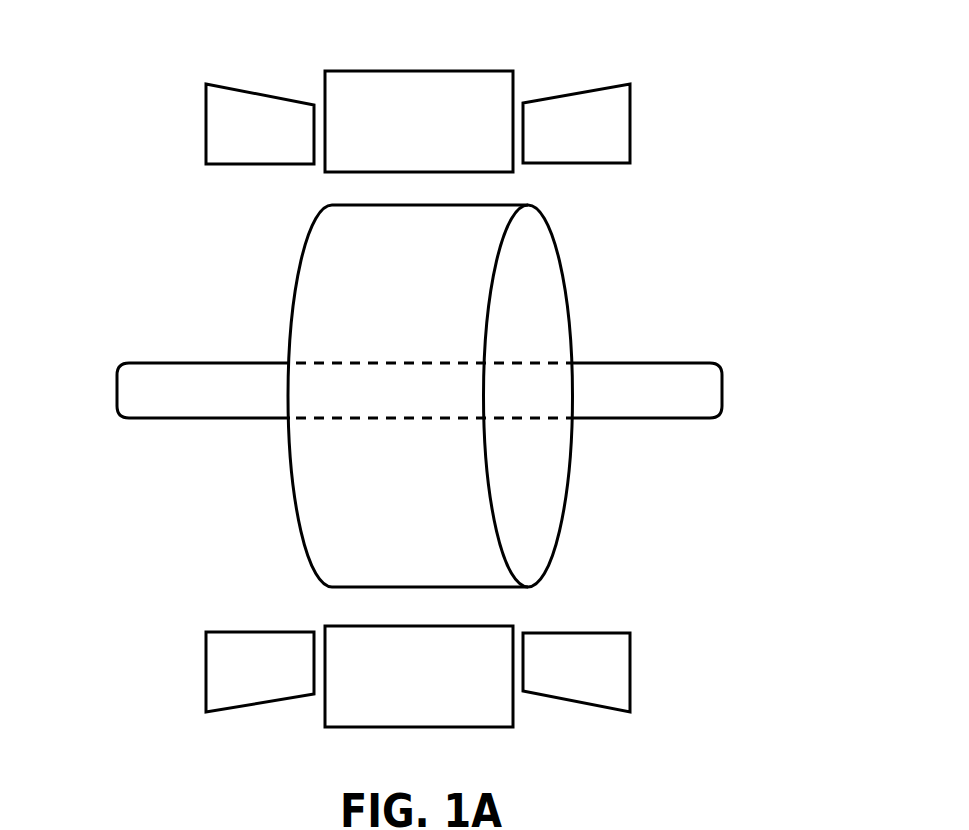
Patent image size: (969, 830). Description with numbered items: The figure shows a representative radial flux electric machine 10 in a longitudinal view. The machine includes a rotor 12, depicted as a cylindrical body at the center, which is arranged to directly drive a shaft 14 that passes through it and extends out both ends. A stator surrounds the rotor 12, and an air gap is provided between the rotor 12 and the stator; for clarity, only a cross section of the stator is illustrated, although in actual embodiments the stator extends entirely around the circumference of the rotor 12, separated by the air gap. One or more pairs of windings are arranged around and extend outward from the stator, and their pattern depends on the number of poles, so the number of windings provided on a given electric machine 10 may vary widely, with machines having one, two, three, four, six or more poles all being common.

The radial flux electric machine 10 is at (106, 737).
The rotor 12 is at (312, 292).
The shaft 14 is at (712, 392).